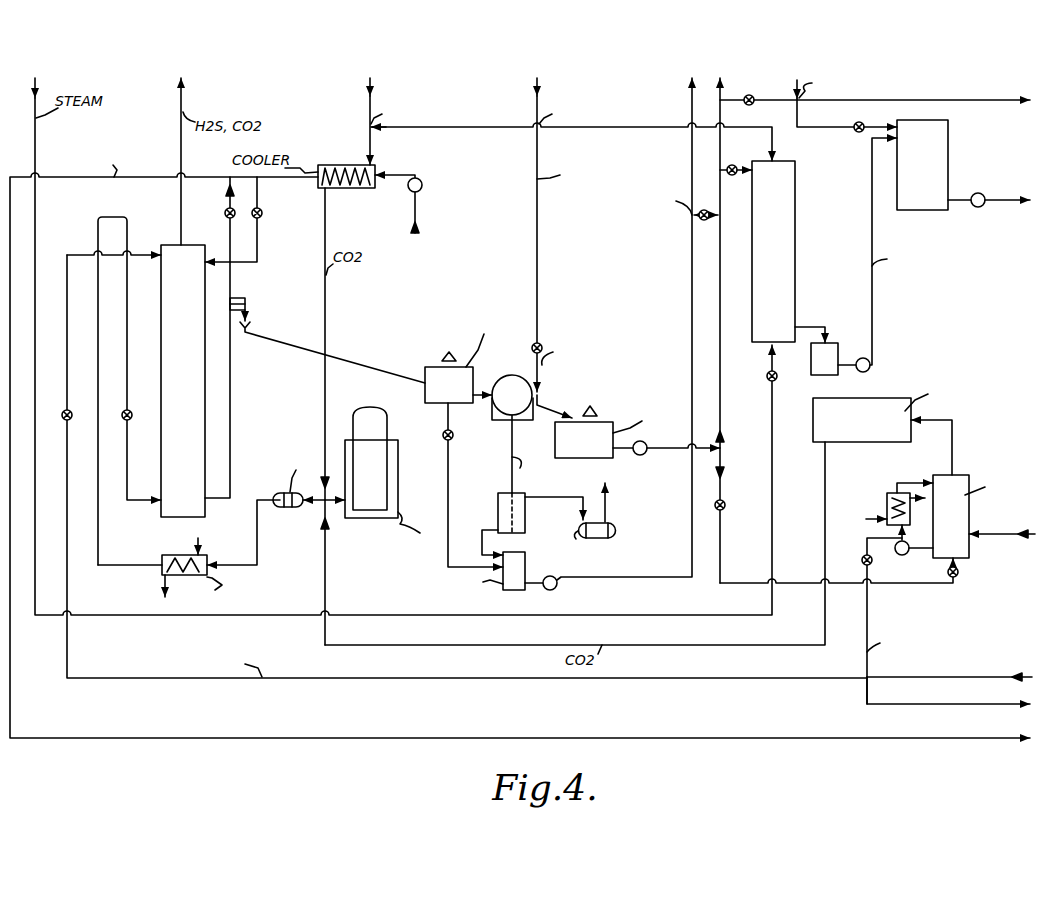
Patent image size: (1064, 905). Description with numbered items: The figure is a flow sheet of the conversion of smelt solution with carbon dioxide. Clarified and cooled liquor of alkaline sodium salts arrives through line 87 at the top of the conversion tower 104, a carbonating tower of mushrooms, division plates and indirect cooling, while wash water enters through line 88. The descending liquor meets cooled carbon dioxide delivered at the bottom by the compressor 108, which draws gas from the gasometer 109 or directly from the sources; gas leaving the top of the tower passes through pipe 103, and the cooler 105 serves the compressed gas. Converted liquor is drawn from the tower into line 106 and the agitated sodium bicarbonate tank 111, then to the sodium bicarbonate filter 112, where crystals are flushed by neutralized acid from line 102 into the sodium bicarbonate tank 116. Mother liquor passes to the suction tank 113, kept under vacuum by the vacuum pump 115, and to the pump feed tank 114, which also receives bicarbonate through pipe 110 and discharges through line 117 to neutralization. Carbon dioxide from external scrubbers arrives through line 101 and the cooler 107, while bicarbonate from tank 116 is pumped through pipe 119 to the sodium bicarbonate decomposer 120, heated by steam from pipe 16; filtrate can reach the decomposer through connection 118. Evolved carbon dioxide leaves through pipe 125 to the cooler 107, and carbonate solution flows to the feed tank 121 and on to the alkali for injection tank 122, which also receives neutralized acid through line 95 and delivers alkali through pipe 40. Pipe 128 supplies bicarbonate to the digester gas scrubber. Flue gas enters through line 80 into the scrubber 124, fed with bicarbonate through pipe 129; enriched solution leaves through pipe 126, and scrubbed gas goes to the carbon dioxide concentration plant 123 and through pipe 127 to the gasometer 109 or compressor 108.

The steam pipe 16 is at (35, 96).
The alkali injection pipe 40 is at (998, 197).
The flue gas line 80 is at (1003, 534).
The clarified liquor line 87 is at (66, 465).
The wash water line 88 is at (62, 182).
The neutralized acid line 95 is at (797, 92).
The carbon dioxide line 101 is at (370, 93).
The neutralized acid line 102 is at (537, 100).
The tower gas outlet pipe 103 is at (183, 104).
The conversion tower 104 is at (160, 512).
The cooler 105 is at (208, 557).
The tower discharge line 106 is at (383, 371).
The cooler 107 is at (357, 162).
The compressor 108 is at (292, 508).
The gasometer 109 is at (380, 483).
The bicarbonate pipe 110 is at (448, 473).
The sodium bicarbonate tank 111 is at (432, 367).
The sodium bicarbonate filter 112 is at (500, 369).
The suction tank 113 is at (498, 510).
The pump feed tank 114 is at (522, 590).
The vacuum pump 115 is at (613, 522).
The sodium bicarbonate tank 116 is at (555, 433).
The feed tank discharge line 117 is at (692, 98).
The connection 118 is at (680, 221).
The bicarbonate pump pipe 119 is at (724, 95).
The sodium bicarbonate decomposer 120 is at (795, 225).
The feed tank 121 is at (835, 342).
The alkali for injection tank 122 is at (937, 168).
The carbon dioxide concentration plant 123 is at (840, 401).
The flue gas scrubber 124 is at (945, 478).
The decomposer gas pipe 125 is at (636, 127).
The scrubber discharge pipe 126 is at (968, 703).
The concentrated carbon dioxide pipe 127 is at (826, 484).
The bicarbonate supply pipe 128 is at (958, 100).
The scrubber bicarbonate pipe 129 is at (720, 532).